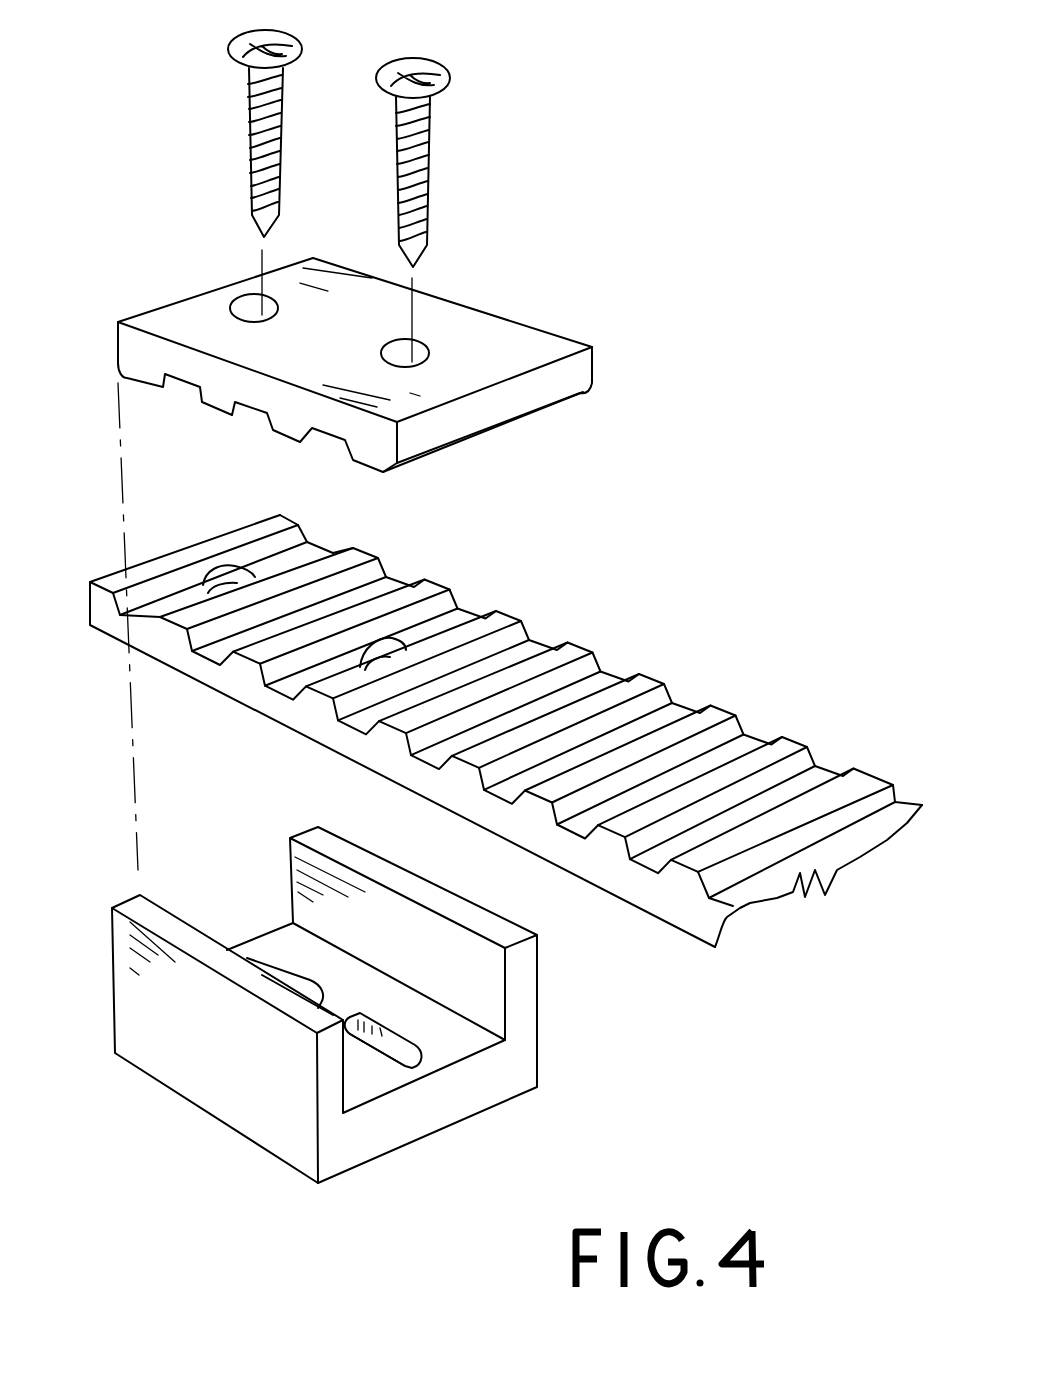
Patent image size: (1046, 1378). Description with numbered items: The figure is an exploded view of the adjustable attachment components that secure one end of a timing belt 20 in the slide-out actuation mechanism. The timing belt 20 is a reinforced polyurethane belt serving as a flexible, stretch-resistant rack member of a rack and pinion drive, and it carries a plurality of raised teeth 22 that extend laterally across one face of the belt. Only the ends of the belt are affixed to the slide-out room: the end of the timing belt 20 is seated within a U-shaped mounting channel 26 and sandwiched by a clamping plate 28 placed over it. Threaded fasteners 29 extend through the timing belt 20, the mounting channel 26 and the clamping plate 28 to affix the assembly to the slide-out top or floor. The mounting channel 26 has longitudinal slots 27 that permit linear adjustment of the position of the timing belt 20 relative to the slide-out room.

The timing belt 20 is at (506, 731).
The raised teeth 22 is at (503, 617).
The U-shaped mounting channel 26 is at (347, 1005).
The longitudinal slot 27 is at (385, 1047).
The clamping plate 28 is at (467, 342).
The threaded fastener 29 is at (433, 155).